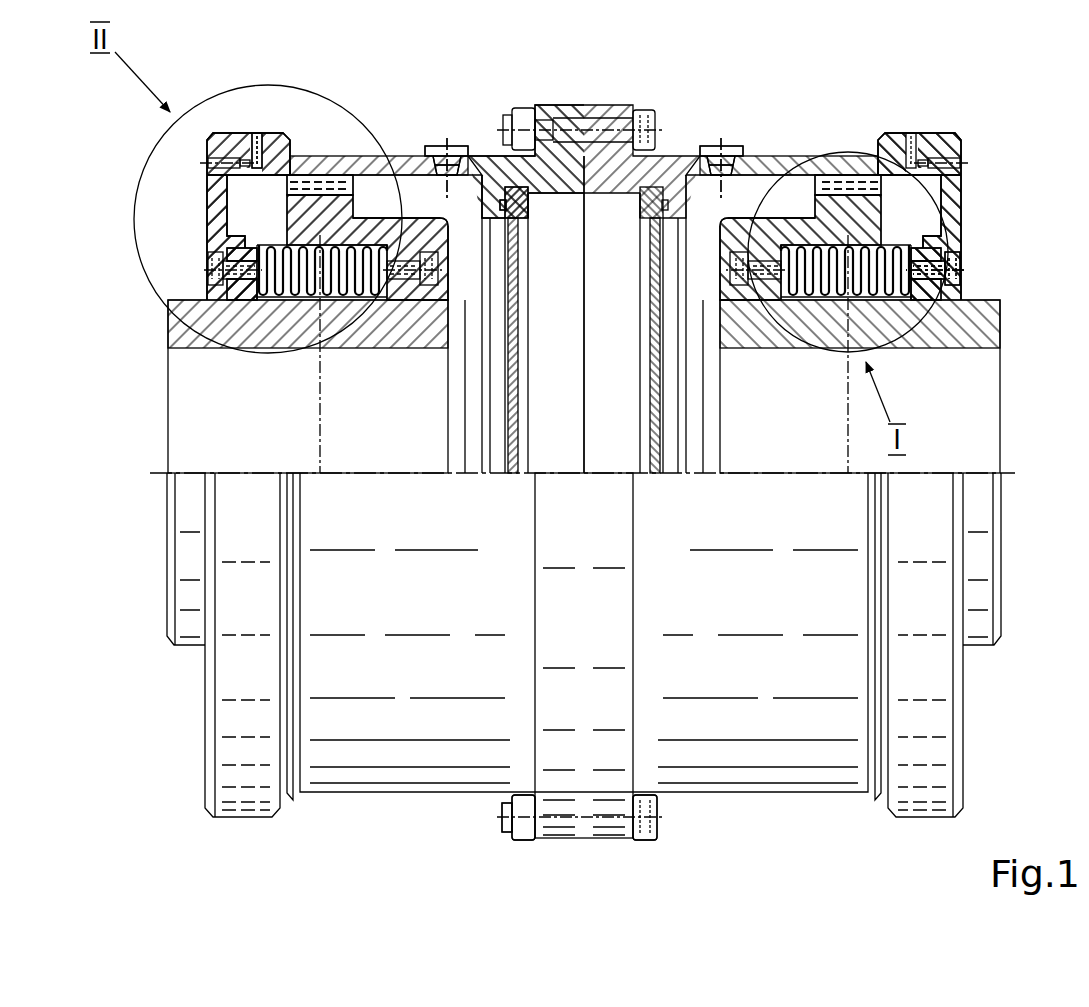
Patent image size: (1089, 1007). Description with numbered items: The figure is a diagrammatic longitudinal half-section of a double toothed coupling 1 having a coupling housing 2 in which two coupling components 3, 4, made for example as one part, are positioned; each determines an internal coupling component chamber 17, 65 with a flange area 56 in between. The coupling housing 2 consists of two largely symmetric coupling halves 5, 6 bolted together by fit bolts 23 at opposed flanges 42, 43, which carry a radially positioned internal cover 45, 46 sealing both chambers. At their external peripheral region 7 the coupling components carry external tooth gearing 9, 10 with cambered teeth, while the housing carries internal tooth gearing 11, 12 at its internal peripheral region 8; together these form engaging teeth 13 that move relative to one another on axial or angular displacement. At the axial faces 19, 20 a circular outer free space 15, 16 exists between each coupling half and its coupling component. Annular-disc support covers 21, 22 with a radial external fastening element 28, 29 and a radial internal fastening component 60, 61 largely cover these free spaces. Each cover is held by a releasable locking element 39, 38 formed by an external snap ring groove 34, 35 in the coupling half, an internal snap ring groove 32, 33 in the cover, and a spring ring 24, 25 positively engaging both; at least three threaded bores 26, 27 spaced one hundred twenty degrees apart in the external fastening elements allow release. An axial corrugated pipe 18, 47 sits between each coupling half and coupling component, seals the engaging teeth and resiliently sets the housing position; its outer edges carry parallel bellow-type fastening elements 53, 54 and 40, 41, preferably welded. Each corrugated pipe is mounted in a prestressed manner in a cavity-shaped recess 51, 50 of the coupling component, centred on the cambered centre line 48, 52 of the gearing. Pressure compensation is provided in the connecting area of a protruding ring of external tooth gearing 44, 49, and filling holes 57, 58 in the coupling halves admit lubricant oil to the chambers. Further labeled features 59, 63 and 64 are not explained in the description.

The double toothed coupling 1 is at (562, 100).
The coupling housing 2 is at (690, 152).
The coupling component 3 is at (190, 335).
The coupling component 4 is at (985, 335).
The coupling half 5 is at (452, 146).
The coupling half 6 is at (722, 158).
The external peripheral region 7 is at (365, 215).
The internal peripheral region 8 is at (415, 158).
The external tooth gearing 9 is at (310, 178).
The external tooth gearing 10 is at (865, 185).
The internal tooth gearing 11 is at (400, 187).
The internal tooth gearing 12 is at (840, 188).
The engaging teeth 13 is at (322, 190).
The outer free space 15 is at (215, 270).
The outer free space 16 is at (955, 270).
The internal coupling component chamber 17 is at (465, 478).
The corrugated pipe 18 is at (300, 265).
The axial face 19 is at (228, 245).
The axial face 20 is at (942, 245).
The support cover 21 is at (215, 190).
The support cover 22 is at (955, 190).
The fit bolt 23 is at (592, 118).
The spring ring 24 is at (245, 163).
The spring ring 25 is at (928, 163).
The threaded bore 26 is at (908, 130).
The threaded bore 27 is at (260, 133).
The external fastening element 28 is at (950, 140).
The external fastening element 29 is at (232, 140).
The internal snap ring groove 32 is at (237, 133).
The internal snap ring groove 33 is at (948, 142).
The external snap ring groove 34 is at (232, 190).
The external snap ring groove 35 is at (945, 188).
The releasable locking element 38 is at (920, 135).
The releasable locking element 39 is at (254, 128).
The fastening element 40 is at (790, 290).
The fastening element 41 is at (935, 280).
The flange 42 is at (550, 842).
The flange 43 is at (618, 845).
The protruding ring of external tooth gearing 44 is at (305, 212).
The internal cover 45 is at (517, 355).
The internal cover 46 is at (653, 355).
The corrugated pipe 47 is at (912, 290).
The cambered centre line 48 is at (322, 448).
The protruding ring of external tooth gearing 49 is at (858, 224).
The recess with cavity-shaped cross-section 50 is at (830, 296).
The recess with cavity-shaped cross-section 51 is at (335, 295).
The cambered centre line 52 is at (848, 452).
The fastening element 53 is at (235, 290).
The fastening element 54 is at (410, 287).
The flange area 56 is at (568, 275).
The filling hole 57 is at (472, 165).
The filling hole 58 is at (700, 150).
The shaft 59 is at (590, 440).
The internal fastening component 60 is at (930, 296).
The internal fastening component 61 is at (240, 296).
The hub flange 63 is at (780, 478).
The hub flange 64 is at (385, 478).
The internal coupling component chamber 65 is at (703, 478).